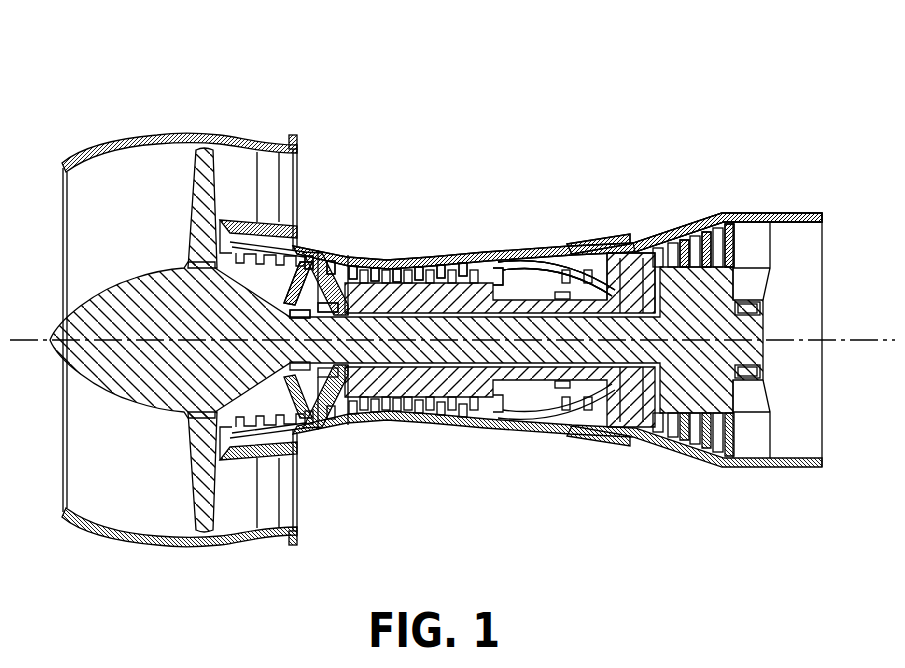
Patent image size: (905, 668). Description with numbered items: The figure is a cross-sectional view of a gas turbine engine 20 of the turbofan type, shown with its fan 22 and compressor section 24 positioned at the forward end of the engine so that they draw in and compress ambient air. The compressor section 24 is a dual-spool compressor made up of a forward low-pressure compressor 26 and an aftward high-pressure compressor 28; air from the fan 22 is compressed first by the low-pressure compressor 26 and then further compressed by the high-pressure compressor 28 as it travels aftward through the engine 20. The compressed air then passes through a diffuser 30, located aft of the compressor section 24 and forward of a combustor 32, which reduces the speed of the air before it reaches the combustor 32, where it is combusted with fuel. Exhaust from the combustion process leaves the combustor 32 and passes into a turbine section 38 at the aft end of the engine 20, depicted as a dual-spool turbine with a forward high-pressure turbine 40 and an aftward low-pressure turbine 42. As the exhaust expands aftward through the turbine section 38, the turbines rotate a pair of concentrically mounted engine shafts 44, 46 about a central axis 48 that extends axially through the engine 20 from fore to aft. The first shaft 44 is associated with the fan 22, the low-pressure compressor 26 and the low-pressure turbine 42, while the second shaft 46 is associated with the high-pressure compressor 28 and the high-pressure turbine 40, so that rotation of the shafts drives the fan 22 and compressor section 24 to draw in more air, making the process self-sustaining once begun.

The gas turbine engine 20 is at (527, 118).
The fan 22 is at (203, 220).
The compressor section 24 is at (362, 212).
The low-pressure compressor 26 is at (265, 282).
The high-pressure compressor 28 is at (381, 292).
The diffuser 30 is at (502, 270).
The combustor 32 is at (567, 270).
The turbine section 38 is at (678, 203).
The high-pressure turbine 40 is at (622, 267).
The low-pressure turbine 42 is at (727, 255).
The first shaft 44 is at (500, 347).
The second shaft 46 is at (568, 373).
The central axis 48 is at (838, 340).